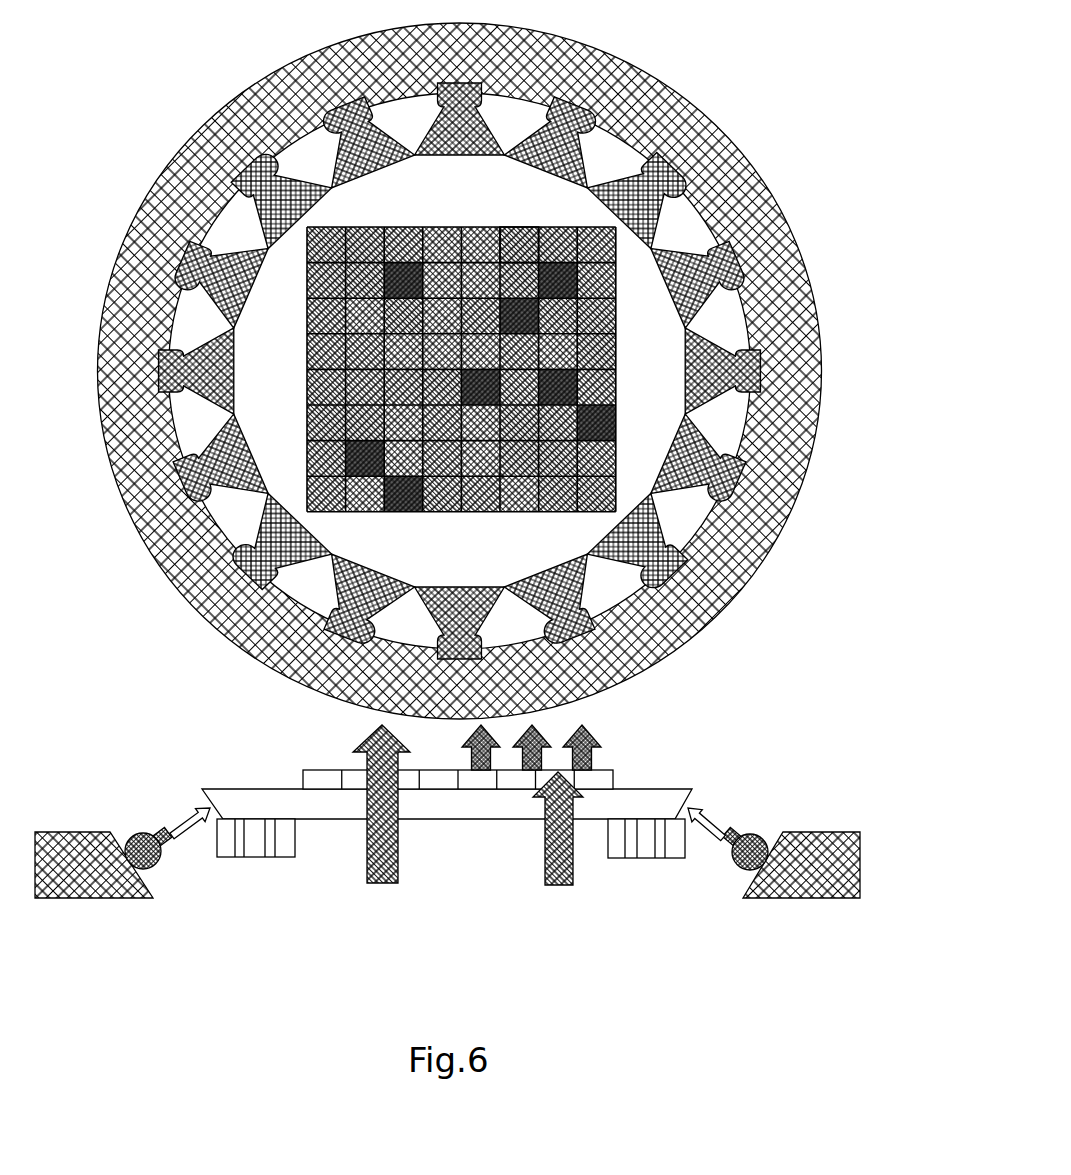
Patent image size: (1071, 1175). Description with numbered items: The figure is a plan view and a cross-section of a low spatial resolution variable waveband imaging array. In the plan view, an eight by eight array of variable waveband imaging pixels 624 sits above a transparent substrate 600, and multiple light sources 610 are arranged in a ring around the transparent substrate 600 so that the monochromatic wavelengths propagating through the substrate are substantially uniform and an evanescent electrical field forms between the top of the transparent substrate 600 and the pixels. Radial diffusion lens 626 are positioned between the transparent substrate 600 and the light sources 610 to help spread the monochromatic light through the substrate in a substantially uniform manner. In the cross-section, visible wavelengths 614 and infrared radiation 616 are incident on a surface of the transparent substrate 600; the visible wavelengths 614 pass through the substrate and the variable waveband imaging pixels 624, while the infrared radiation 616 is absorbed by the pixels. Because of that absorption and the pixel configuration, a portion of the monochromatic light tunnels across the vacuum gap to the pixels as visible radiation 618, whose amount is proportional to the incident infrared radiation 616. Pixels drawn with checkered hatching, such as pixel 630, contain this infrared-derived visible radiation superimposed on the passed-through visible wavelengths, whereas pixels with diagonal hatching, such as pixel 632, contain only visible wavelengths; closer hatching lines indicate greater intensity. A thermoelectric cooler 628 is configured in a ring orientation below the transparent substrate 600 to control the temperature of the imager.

The transparent substrate 600 is at (252, 325).
The light sources 610 is at (677, 112).
The visible wavelengths 614 is at (373, 862).
The infrared radiation 616 is at (562, 884).
The visible radiation 618 is at (570, 735).
The variable waveband imaging pixels 624 is at (607, 497).
The radial diffusion lens 626 is at (673, 172).
The thermoelectric cooler 628 is at (268, 858).
The imaging pixel with checkered hatching 630 is at (477, 243).
The imaging pixel with diagonal hatching 632 is at (527, 246).